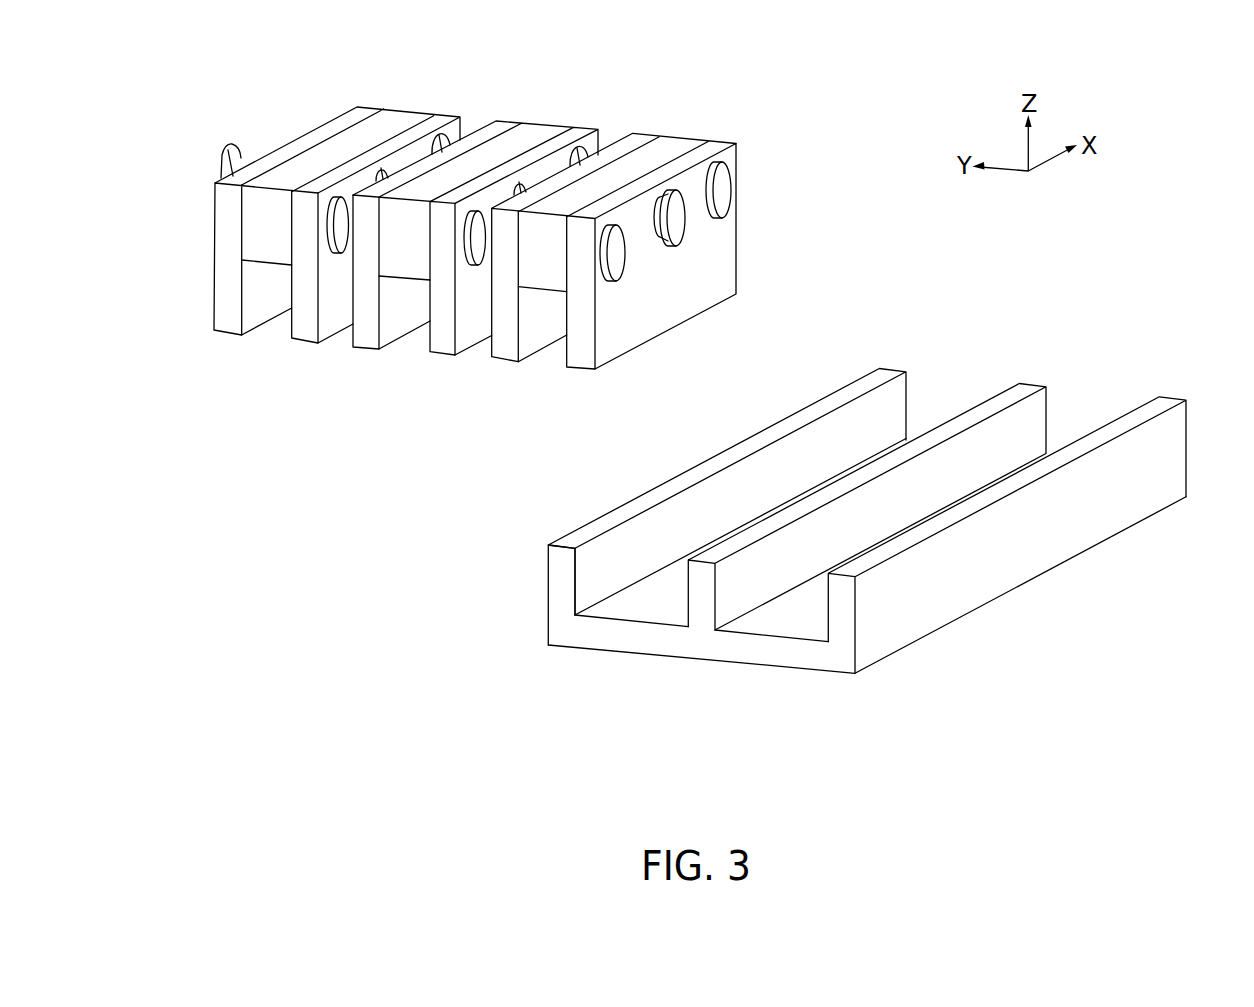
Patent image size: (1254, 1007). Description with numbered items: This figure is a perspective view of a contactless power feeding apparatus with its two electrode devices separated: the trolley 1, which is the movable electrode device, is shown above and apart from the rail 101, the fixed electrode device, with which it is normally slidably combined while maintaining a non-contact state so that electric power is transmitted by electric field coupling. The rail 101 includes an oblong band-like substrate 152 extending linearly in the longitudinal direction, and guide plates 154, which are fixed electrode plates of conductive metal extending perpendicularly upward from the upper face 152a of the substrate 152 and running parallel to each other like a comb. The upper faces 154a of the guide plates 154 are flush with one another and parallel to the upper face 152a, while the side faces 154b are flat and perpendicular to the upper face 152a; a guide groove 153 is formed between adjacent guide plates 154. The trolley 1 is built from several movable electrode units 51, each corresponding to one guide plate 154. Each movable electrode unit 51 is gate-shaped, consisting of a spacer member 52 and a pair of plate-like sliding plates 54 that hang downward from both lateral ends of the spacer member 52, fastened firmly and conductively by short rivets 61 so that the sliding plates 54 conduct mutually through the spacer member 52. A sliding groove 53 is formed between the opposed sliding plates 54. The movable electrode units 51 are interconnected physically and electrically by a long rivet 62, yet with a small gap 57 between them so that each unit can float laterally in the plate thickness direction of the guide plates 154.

The trolley 1 is at (655, 96).
The movable electrode unit 51 is at (410, 108).
The spacer member 52 is at (680, 143).
The small gap 57 is at (607, 142).
The sliding groove 53 is at (553, 357).
The sliding plate 54 is at (722, 265).
The short rivet 61 is at (722, 190).
The long rivet 62 is at (681, 230).
The rail 101 is at (1106, 597).
The substrate 152 is at (628, 635).
The upper face of the substrate 152a is at (778, 624).
The guide groove 153 is at (1077, 422).
The guide plate 154 is at (898, 407).
The upper face of the guide plate 154a is at (574, 546).
The side face of the guide plate 154b is at (583, 572).